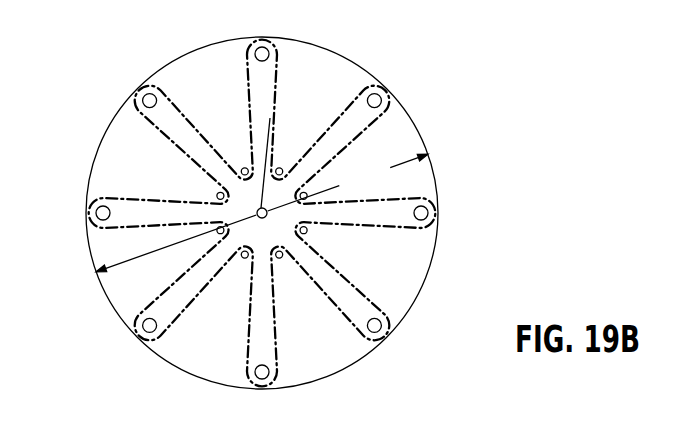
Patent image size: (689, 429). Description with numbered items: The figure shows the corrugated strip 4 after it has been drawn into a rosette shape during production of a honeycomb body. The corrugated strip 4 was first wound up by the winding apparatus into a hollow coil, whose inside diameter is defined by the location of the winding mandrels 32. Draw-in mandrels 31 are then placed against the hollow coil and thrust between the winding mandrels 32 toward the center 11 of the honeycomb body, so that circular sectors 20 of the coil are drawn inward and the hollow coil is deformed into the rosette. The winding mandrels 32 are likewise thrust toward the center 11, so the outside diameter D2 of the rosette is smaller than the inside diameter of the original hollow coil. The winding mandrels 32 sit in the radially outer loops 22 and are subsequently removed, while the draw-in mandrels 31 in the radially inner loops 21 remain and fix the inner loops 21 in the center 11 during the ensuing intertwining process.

The corrugated strip 4 is at (157, 117).
The circular sectors 20 is at (227, 108).
The center 11 is at (278, 166).
The draw-in mandrels 31 is at (305, 147).
The radially inner loops 21 is at (316, 232).
The radially outer loops 22 is at (367, 297).
The winding mandrels 32 is at (90, 220).
The outside diameter of the rosette D2 is at (262, 213).